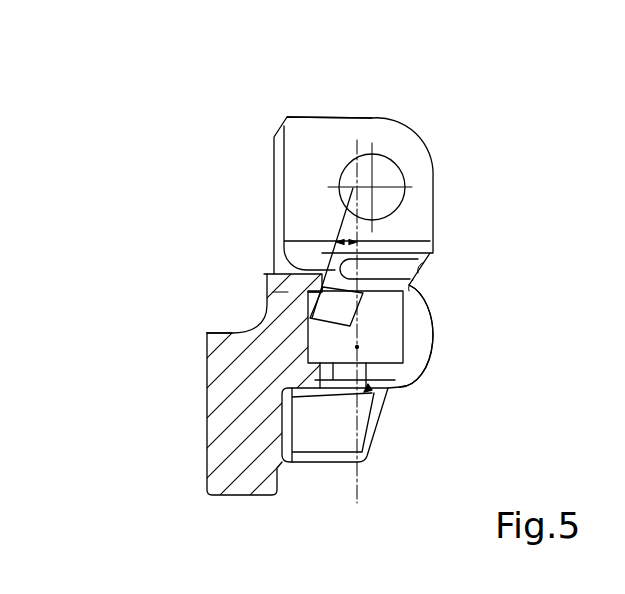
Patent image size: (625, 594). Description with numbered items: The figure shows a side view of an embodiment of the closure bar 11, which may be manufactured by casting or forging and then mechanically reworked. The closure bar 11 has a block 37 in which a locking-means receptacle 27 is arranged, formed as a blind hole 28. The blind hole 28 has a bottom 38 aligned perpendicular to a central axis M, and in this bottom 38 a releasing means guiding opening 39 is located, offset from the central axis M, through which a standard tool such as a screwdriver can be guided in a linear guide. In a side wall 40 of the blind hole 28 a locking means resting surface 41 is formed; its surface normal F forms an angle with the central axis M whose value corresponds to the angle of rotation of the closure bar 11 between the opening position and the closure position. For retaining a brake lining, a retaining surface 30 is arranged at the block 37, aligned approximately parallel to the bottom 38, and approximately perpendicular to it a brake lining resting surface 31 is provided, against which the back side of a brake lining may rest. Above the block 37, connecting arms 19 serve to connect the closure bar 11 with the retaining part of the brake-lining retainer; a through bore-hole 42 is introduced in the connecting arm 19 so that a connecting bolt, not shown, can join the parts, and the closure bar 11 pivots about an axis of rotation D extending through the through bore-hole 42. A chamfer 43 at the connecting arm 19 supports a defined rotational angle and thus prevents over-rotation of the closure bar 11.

The chamfer 43 is at (272, 135).
The connecting arm 19 is at (373, 117).
The through bore-hole 42 is at (395, 164).
The axis of rotation D is at (380, 185).
The locking-means receptacle 27 is at (415, 322).
The blind hole 28 is at (357, 347).
The locking means resting surface 41 is at (297, 297).
The surface normal F is at (330, 268).
The side wall 40 is at (273, 292).
The closure bar 11 is at (432, 355).
The block 37 is at (357, 347).
The central axis M is at (412, 362).
The releasing means guiding opening 39 is at (388, 390).
The bottom 38 is at (324, 364).
The brake lining resting surface 31 is at (205, 433).
The retaining surface 30 is at (245, 333).